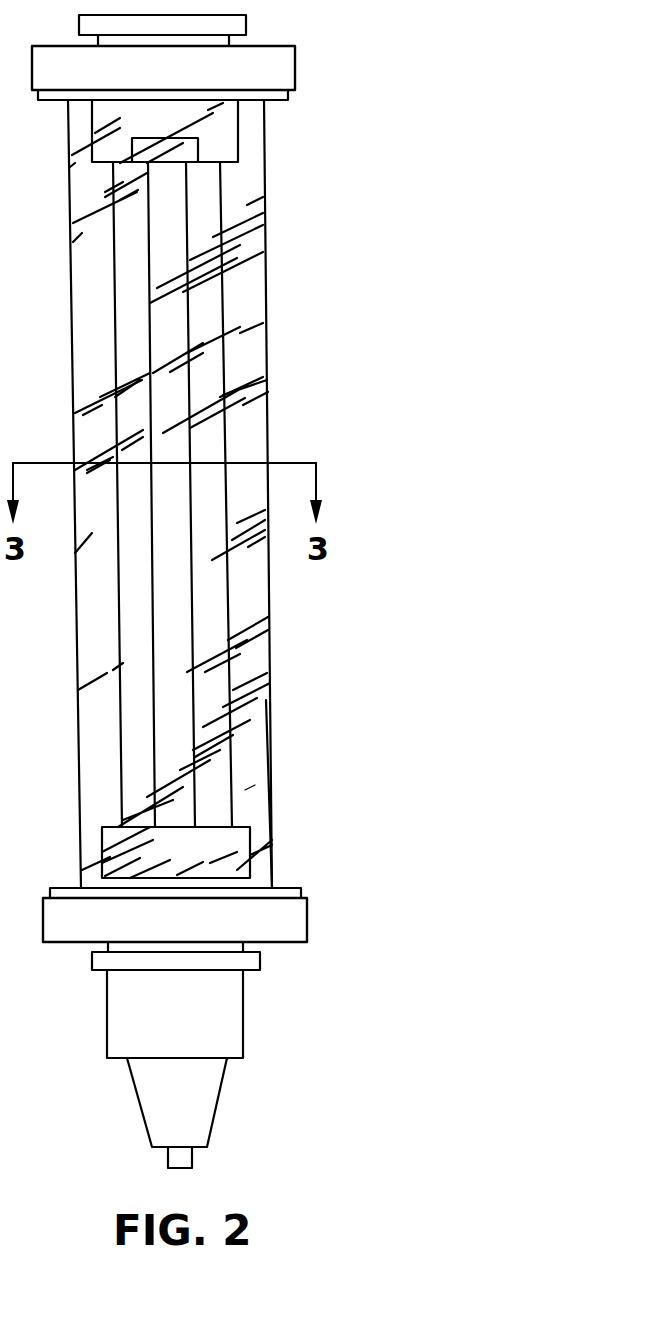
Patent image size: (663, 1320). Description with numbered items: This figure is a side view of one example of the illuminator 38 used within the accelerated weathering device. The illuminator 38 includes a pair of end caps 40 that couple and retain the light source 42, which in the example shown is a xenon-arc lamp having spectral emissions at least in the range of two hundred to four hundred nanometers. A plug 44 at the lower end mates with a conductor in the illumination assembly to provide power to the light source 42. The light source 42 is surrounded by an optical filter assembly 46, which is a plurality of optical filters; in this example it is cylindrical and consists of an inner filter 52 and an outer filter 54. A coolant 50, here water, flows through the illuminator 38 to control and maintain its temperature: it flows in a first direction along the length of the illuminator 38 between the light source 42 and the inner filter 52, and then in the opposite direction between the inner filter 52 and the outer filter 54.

The illuminator 38 is at (440, 188).
The end caps 40 is at (295, 68).
The light source 42 is at (175, 318).
The plug 44 is at (242, 1093).
The optical filter assembly 46 is at (282, 699).
The coolant 50 is at (252, 784).
The inner filter 52 is at (228, 607).
The outer filter 54 is at (273, 767).